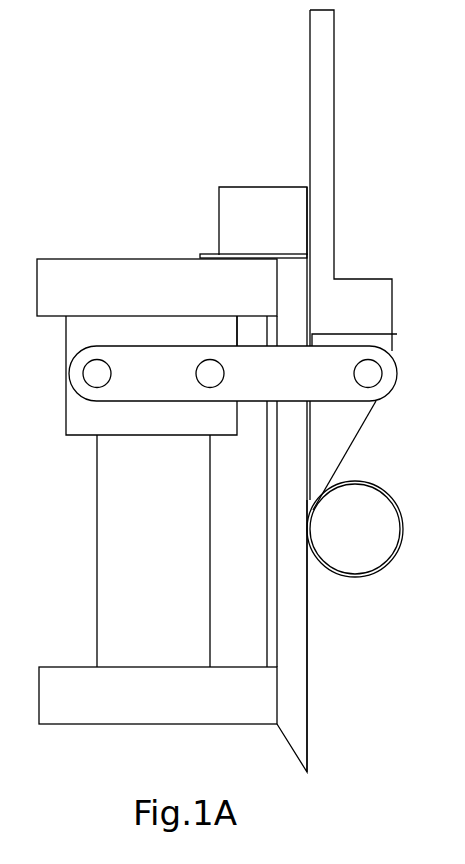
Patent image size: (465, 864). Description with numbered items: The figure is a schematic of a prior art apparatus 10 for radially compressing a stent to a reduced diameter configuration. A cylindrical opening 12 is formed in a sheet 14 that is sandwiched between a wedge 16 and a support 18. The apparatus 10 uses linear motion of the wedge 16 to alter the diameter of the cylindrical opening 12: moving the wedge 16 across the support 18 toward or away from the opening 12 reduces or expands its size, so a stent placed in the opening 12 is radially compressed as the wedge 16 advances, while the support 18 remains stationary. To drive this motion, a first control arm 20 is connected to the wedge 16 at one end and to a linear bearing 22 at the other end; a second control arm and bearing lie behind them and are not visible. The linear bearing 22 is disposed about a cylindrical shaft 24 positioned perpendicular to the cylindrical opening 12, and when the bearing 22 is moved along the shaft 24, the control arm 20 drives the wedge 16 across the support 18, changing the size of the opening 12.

The apparatus 10 is at (142, 125).
The cylindrical opening 12 is at (355, 546).
The sheet 14 is at (403, 521).
The wedge 16 is at (343, 430).
The support 18 is at (293, 713).
The first control arm 20 is at (138, 380).
The linear bearing 22 is at (82, 339).
The cylindrical shaft 24 is at (118, 615).